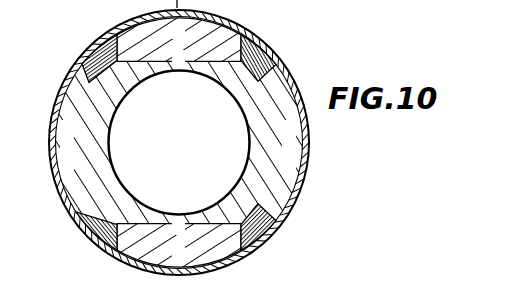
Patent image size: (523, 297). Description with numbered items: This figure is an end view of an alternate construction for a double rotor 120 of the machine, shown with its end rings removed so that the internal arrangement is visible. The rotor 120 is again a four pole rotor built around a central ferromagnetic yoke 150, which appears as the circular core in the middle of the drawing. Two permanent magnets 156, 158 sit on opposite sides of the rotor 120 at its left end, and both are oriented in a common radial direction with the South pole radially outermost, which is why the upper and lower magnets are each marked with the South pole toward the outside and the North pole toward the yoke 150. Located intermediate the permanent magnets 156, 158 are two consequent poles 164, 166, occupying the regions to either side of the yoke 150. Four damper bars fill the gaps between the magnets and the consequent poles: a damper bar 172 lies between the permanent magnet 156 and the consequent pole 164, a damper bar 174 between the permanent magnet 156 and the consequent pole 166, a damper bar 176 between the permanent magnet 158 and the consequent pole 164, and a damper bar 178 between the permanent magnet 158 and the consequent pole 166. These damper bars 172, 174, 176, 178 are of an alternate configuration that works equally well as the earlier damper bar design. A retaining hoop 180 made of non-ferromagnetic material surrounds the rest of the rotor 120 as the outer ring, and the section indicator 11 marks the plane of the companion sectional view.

The section line 11- 11 is at (25, 158).
The double rotor 120 is at (296, 28).
The ferromagnetic yoke 150 is at (116, 113).
The permanent magnet 156 is at (232, 32).
The permanent magnet 158 is at (235, 252).
The consequent pole 164 is at (76, 170).
The consequent pole 166 is at (288, 160).
The damper bar 172 is at (83, 61).
The damper bar 174 is at (278, 67).
The damper bar 176 is at (90, 234).
The damper bar 178 is at (275, 227).
The retaining hoop 180 is at (54, 99).